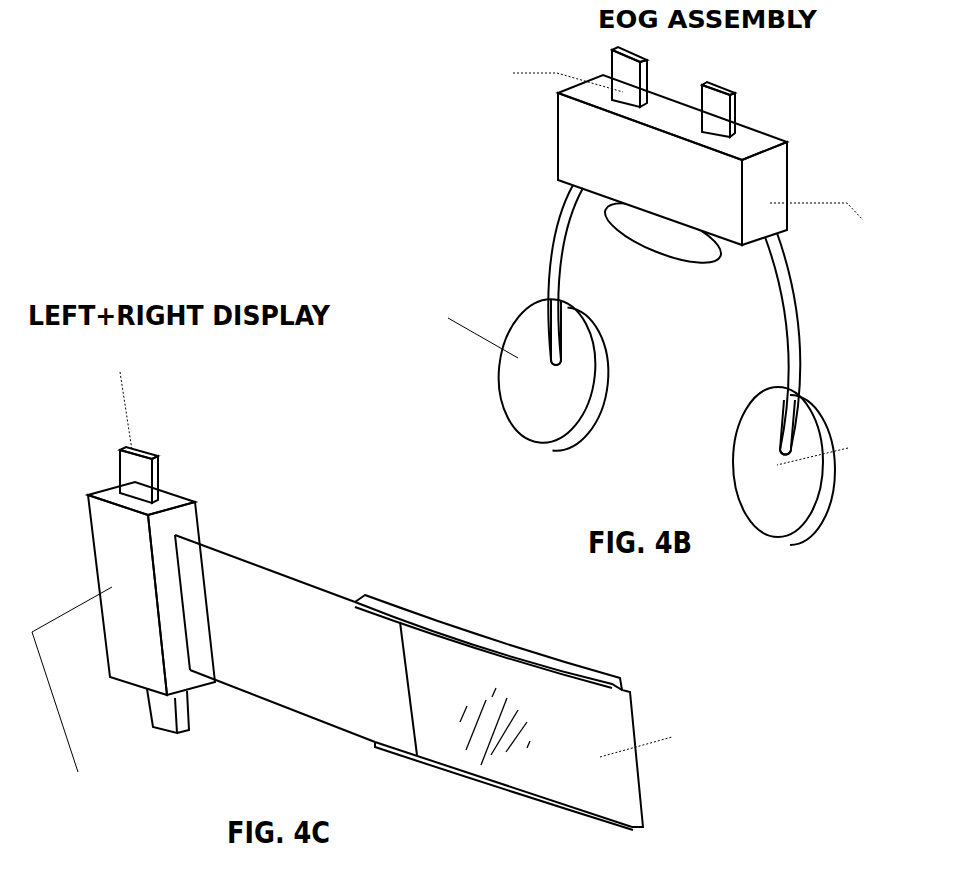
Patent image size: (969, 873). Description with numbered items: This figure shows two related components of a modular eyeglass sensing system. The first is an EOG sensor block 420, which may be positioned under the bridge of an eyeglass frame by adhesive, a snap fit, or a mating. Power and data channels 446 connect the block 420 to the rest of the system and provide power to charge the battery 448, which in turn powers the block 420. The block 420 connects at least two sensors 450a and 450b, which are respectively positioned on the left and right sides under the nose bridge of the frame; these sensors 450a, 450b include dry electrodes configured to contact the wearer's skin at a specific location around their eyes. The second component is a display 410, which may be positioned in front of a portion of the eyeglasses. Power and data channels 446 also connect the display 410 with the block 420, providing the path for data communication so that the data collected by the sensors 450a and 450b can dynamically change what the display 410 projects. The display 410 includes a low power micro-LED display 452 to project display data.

In FIG. 4B, the EOG sensor block 420 is at (790, 78).
In FIG. 4B, the power and data channels 446 is at (627, 70).
In FIG. 4C, the power and data channels 446 is at (137, 475).
In FIG. 4B, the battery 448 is at (770, 187).
In FIG. 4B, the sensor 450a is at (522, 407).
In FIG. 4B, the sensor 450b is at (792, 492).
In FIG. 4C, the display 410 is at (313, 525).
In FIG. 4C, the low power micro-LED display 452 is at (130, 660).